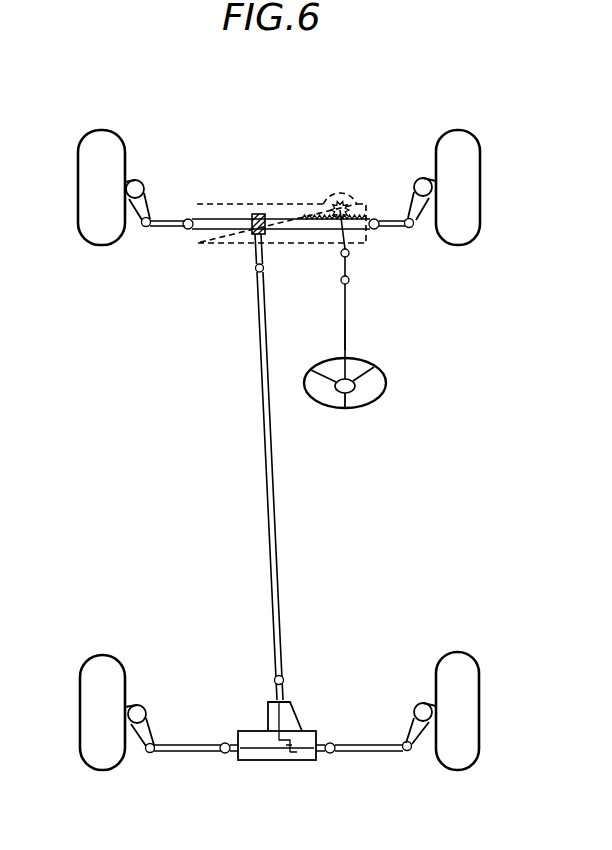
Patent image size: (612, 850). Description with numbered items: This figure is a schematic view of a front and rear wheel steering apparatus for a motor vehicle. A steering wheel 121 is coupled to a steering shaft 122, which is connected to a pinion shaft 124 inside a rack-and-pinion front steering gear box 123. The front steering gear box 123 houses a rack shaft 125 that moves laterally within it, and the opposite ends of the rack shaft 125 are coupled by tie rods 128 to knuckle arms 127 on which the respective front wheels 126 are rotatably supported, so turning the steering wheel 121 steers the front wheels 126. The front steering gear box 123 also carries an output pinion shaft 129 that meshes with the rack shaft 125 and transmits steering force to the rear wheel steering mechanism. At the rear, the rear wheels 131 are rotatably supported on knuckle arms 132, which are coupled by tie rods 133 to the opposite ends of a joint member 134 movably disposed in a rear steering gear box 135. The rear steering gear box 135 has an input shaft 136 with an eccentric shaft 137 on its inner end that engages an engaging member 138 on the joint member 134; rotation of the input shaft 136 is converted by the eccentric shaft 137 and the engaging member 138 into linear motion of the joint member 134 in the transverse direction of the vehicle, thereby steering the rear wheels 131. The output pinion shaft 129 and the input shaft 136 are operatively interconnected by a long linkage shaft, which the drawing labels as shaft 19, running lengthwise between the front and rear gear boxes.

The steering shaft 19 is at (272, 500).
The steering wheel 121 is at (386, 392).
The steering shaft 122 is at (349, 335).
The front steering gear box 123 is at (278, 203).
The pinion shaft 124 is at (352, 235).
The rack shaft 125 is at (292, 230).
The front wheels 126 is at (93, 157).
The knuckle arms 127 is at (148, 206).
The tie rods 128 is at (165, 228).
The output pinion shaft 129 is at (257, 257).
The rear wheels 131 is at (96, 758).
The knuckle arms 132 is at (150, 730).
The tie rods 133 is at (195, 755).
The joint member 134 is at (233, 757).
The rear steering gear box 135 is at (282, 762).
The input shaft 136 is at (275, 689).
The eccentric shaft 137 is at (296, 741).
The engaging member 138 is at (295, 748).